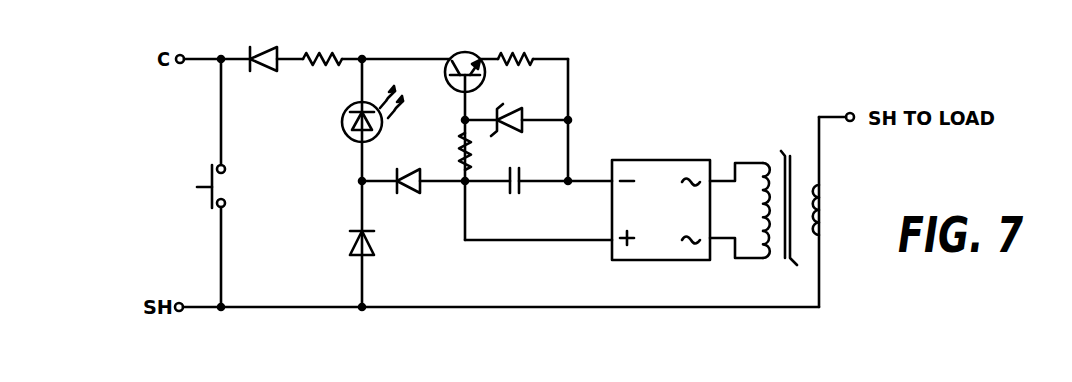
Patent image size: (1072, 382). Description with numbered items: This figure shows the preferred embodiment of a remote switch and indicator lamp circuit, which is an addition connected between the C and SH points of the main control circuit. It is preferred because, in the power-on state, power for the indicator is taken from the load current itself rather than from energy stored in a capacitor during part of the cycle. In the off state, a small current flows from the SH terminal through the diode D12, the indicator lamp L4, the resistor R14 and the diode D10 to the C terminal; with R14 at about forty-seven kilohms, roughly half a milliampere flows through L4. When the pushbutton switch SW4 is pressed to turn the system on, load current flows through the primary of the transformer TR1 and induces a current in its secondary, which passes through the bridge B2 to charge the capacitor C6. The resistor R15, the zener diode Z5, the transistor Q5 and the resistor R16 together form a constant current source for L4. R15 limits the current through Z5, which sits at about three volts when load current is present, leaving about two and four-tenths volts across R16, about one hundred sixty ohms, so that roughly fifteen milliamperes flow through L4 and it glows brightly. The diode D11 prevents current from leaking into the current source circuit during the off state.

The diode D10 is at (266, 46).
The resistor R14 is at (322, 43).
The indicator lamp L4 is at (354, 114).
The transistor Q5 is at (465, 59).
The resistor R16 is at (515, 43).
The zener diode Z5 is at (516, 109).
The resistor R15 is at (445, 151).
The diode D11 is at (408, 195).
The capacitor C6 is at (518, 196).
The diode D12 is at (383, 247).
The switch SW4 is at (187, 186).
The bridge B2 is at (661, 197).
The transformer TR1 is at (764, 200).